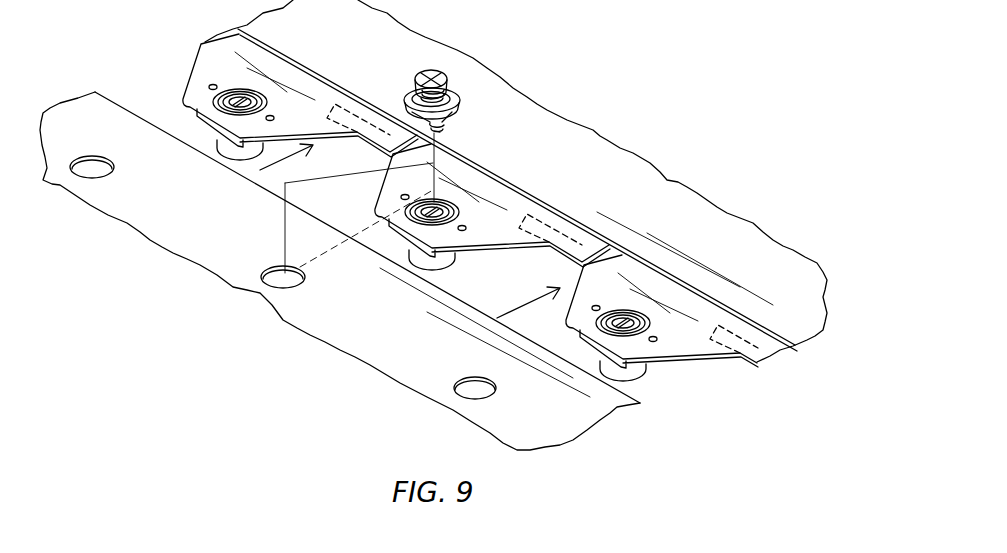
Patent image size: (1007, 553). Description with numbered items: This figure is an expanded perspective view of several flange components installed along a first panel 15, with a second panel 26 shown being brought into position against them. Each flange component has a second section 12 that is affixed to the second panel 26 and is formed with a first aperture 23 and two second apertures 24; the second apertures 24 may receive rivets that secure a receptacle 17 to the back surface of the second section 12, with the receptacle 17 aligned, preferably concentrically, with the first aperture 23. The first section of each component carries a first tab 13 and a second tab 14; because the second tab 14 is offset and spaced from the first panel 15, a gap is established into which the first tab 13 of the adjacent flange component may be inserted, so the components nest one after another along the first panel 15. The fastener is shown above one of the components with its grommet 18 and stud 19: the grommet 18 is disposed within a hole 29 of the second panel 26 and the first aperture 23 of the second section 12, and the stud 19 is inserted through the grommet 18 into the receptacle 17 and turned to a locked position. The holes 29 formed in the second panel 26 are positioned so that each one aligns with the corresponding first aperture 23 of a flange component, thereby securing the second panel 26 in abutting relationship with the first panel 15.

The second section 12 is at (485, 230).
The first tab 13 is at (575, 245).
The second tab 14 is at (339, 110).
The first panel 15 is at (728, 251).
The receptacle 17 is at (445, 260).
The grommet 18 is at (460, 97).
The stud 19 is at (445, 72).
The first aperture 23 is at (230, 107).
The second apertures 24 is at (212, 85).
The second panel 26 is at (210, 216).
The holes 29 is at (130, 226).